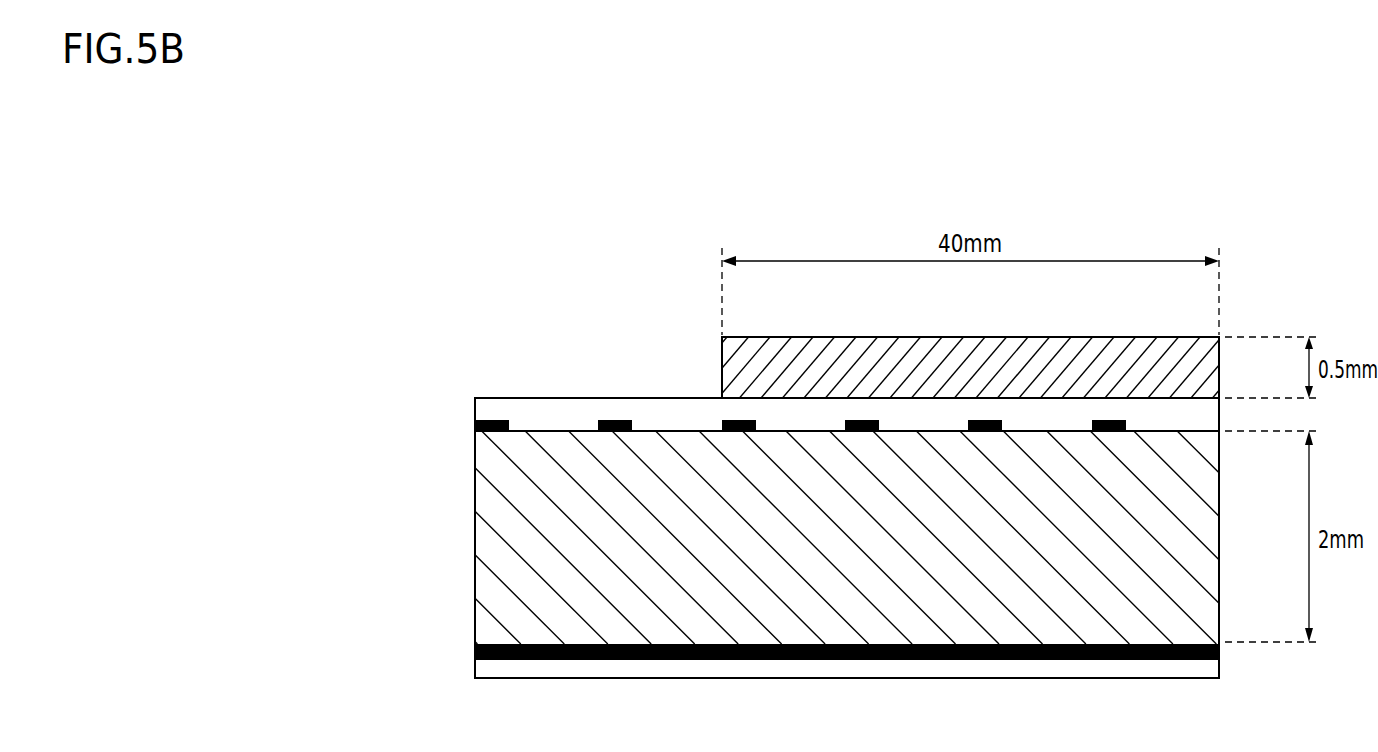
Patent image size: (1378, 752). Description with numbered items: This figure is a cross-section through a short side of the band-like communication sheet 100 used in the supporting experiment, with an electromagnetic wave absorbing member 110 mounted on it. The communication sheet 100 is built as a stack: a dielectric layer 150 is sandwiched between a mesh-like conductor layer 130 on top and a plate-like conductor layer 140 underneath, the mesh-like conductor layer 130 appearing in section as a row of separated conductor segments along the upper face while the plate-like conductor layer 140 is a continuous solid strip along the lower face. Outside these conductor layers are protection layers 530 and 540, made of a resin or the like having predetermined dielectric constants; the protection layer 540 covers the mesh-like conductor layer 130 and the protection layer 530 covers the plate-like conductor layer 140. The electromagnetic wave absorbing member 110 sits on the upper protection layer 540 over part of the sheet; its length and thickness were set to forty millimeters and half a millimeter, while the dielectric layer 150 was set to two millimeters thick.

The communication sheet 100 is at (525, 362).
The electromagnetic wave absorbing member 110 is at (972, 337).
The mesh-like conductor layer 130 is at (491, 418).
The plate-like conductor layer 140 is at (670, 660).
The dielectric layer 150 is at (475, 538).
The protection layer 530 is at (840, 668).
The protection layer 540 is at (633, 408).